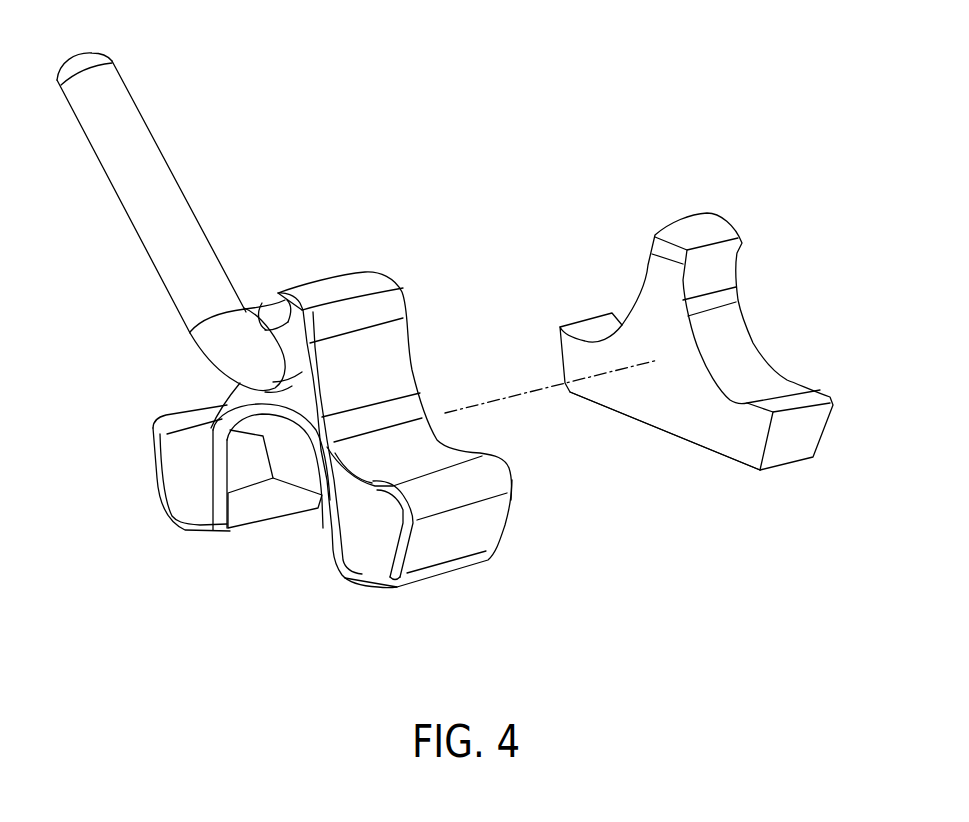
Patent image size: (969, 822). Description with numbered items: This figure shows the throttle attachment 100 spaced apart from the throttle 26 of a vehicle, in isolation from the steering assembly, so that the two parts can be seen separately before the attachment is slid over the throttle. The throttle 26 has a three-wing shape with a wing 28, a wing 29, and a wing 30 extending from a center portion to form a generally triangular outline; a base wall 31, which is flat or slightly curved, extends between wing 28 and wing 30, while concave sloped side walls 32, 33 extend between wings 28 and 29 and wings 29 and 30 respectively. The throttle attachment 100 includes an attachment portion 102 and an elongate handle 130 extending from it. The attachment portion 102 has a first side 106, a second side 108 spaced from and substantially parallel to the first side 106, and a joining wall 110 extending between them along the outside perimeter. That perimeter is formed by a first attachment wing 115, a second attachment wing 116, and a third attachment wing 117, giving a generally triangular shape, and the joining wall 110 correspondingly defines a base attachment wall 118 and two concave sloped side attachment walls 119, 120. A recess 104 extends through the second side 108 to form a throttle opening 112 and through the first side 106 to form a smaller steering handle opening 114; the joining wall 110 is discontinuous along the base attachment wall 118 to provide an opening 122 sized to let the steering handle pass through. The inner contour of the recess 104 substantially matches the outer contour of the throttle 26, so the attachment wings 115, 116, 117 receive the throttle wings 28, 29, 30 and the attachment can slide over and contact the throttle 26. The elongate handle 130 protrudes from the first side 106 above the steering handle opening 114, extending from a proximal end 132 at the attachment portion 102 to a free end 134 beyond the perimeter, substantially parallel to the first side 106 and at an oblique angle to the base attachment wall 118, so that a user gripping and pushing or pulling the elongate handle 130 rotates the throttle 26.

The throttle attachment 100 is at (400, 95).
The elongate handle 130 is at (134, 101).
The free end 134 is at (78, 54).
The proximal end 132 is at (268, 307).
The attachment portion 102 is at (468, 432).
The first side 106 is at (346, 545).
The second attachment wing 116 is at (374, 271).
The throttle opening 112 is at (415, 322).
The side attachment wall 119 is at (410, 350).
The joining wall 110 is at (428, 400).
The second side 108 is at (474, 455).
The first attachment wing 115 is at (508, 525).
The base attachment wall 118 is at (354, 588).
The recess 104 is at (217, 548).
The opening 122 is at (233, 568).
The third attachment wing 117 is at (152, 440).
The side attachment wall 120 is at (222, 406).
The steering handle opening 114 is at (214, 480).
The throttle 26 is at (736, 196).
The wing 29 is at (682, 224).
The side wall 33 is at (648, 276).
The wing 30 is at (560, 330).
The side wall 32 is at (740, 344).
The base wall 31 is at (627, 420).
The wing 28 is at (787, 453).